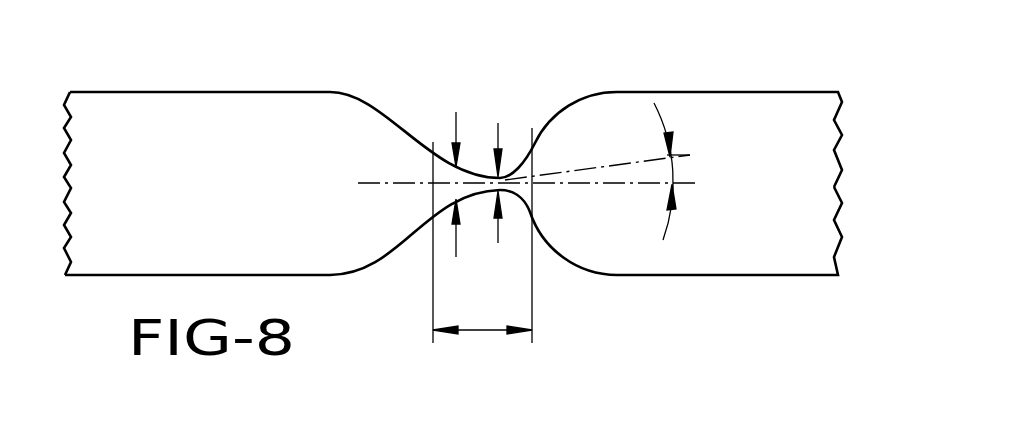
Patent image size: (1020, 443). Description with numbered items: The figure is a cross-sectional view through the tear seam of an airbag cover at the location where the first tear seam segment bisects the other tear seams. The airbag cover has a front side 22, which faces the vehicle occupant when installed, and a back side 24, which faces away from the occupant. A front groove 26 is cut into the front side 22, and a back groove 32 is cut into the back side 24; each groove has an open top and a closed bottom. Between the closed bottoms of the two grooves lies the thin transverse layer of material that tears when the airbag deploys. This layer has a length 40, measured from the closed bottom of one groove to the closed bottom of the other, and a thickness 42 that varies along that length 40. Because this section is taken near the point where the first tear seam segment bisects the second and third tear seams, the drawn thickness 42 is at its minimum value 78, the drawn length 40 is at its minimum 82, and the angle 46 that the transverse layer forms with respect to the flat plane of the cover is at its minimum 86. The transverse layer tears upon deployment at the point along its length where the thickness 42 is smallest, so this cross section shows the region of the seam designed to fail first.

The front side 22 is at (792, 91).
The back side 24 is at (793, 276).
The front groove 26 is at (436, 119).
The back groove 32 is at (556, 276).
The thickness 42 is at (463, 196).
The minimum value 78 is at (503, 175).
The length 40 is at (482, 263).
The minimum 82 is at (483, 331).
The angle 46 is at (658, 171).
The minimum 86 is at (678, 168).